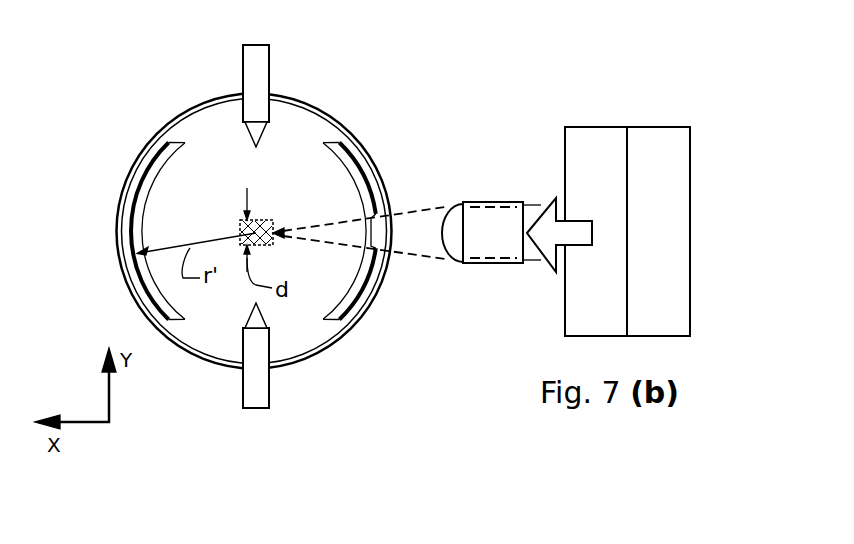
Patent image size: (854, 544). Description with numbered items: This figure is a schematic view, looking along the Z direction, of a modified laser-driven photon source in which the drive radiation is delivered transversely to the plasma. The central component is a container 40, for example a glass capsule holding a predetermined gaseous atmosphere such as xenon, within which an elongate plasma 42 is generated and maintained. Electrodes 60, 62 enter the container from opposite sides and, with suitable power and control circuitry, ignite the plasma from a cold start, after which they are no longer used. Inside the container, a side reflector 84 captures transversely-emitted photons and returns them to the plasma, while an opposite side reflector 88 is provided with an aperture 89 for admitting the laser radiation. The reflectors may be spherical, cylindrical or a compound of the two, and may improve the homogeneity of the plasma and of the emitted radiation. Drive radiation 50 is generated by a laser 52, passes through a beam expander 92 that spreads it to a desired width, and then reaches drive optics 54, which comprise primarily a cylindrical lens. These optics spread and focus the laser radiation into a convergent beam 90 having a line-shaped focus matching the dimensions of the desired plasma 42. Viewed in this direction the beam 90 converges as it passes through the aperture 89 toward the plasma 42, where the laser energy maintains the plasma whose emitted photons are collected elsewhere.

The container 40 is at (345, 122).
The plasma 42 is at (258, 218).
The drive radiation 50 is at (553, 267).
The laser 52 is at (655, 127).
The drive optics 54 is at (487, 264).
The electrode 60 is at (269, 77).
The electrode 62 is at (269, 385).
The side reflector 84 is at (140, 185).
The opposite side reflector 88 is at (374, 192).
The aperture 89 is at (372, 228).
The beam 90 is at (420, 207).
The beam expander 92 is at (565, 150).